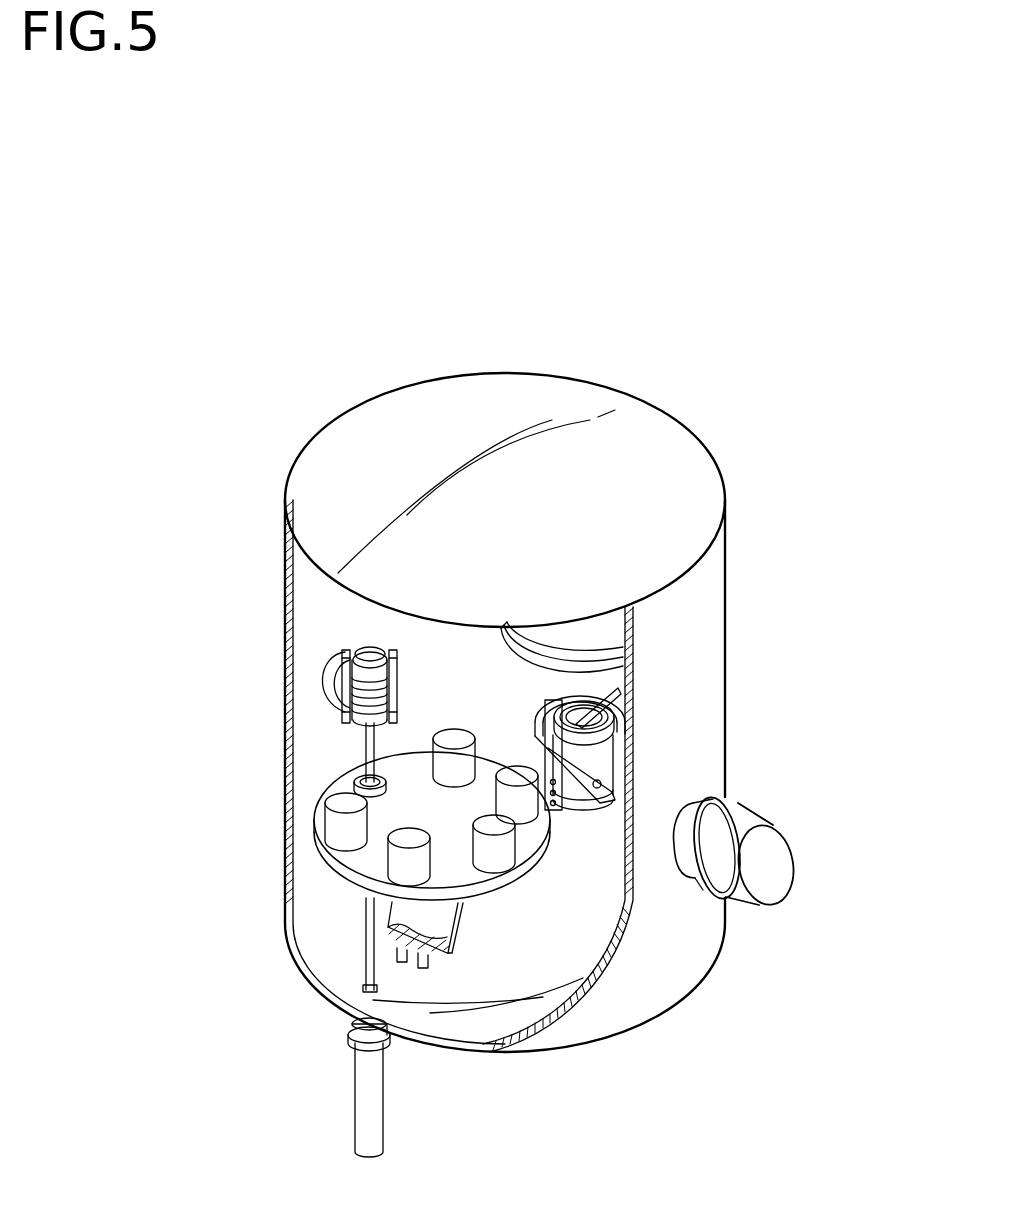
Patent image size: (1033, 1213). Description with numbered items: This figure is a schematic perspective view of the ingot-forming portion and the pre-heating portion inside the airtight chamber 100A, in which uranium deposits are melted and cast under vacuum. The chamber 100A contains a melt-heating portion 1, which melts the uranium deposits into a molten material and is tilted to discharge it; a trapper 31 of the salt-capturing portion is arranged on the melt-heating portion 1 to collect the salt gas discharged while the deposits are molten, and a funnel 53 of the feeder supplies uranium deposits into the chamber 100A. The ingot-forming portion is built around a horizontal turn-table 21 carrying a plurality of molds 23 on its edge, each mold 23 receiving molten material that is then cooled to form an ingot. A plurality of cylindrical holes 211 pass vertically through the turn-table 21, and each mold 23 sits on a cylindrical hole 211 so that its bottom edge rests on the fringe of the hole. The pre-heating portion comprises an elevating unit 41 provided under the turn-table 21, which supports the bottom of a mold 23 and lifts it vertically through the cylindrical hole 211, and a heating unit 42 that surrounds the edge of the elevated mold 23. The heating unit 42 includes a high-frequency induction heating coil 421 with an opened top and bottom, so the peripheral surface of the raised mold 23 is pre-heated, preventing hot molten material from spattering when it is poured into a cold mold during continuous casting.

The chamber 100A is at (693, 460).
The melt-heating portion 1 is at (778, 823).
The turn-table 21 is at (360, 866).
The cylindrical hole 211 is at (358, 784).
The mold 23 is at (370, 658).
The trapper 31 is at (613, 637).
The elevating unit 41 is at (323, 1083).
The heating unit 42 is at (327, 678).
The high-frequency induction heating coil 421 is at (362, 723).
The funnel 53 is at (613, 700).